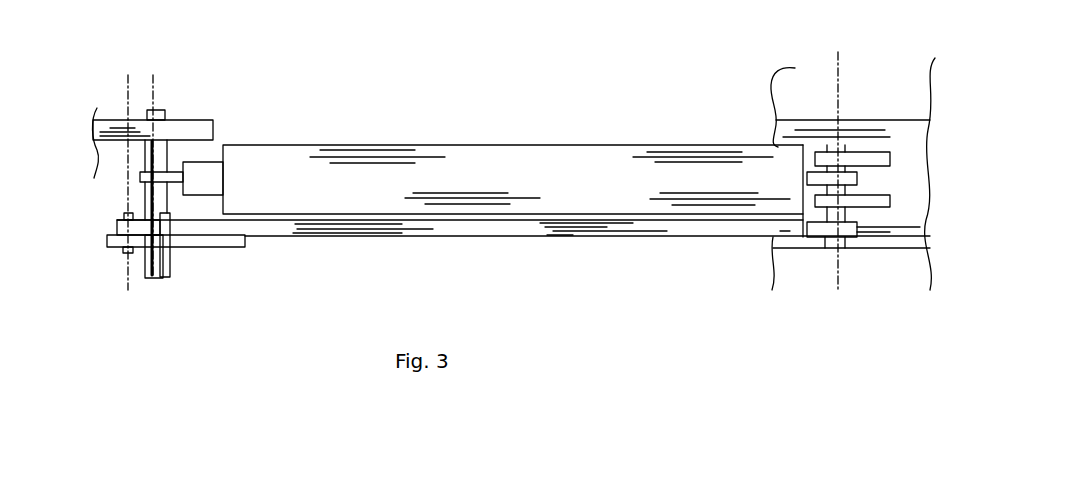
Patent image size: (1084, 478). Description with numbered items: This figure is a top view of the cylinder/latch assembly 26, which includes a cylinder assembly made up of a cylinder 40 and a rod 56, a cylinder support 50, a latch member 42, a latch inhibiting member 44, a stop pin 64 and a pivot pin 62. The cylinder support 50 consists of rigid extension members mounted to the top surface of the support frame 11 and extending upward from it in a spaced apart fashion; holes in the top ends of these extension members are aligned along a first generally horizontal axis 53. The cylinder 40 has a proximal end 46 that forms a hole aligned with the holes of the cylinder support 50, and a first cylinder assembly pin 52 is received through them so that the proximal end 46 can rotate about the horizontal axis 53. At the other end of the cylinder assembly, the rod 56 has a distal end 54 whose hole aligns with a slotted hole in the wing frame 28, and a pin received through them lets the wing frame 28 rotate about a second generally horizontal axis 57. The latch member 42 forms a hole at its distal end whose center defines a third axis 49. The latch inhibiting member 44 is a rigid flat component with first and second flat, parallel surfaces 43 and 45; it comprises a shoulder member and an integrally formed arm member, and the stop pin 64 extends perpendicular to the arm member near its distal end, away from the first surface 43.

The support frame 11 is at (923, 170).
The cylinder/latch assembly 26 is at (545, 116).
The wing frame 28 is at (193, 120).
The cylinder 40 is at (368, 178).
The latch member 42 is at (680, 233).
The first flat surface 43 is at (208, 224).
The latch inhibiting member 44 is at (216, 250).
The second flat surface 45 is at (232, 262).
The proximal end 46 is at (151, 279).
The third axis 49 is at (127, 292).
The cylinder support 50 is at (843, 195).
The first cylinder assembly pin 52 is at (835, 268).
The first horizontal axis 53 is at (836, 285).
The distal end 54 is at (140, 178).
The rod 56 is at (203, 178).
The second horizontal axis 57 is at (152, 298).
The pivot pin 62 is at (124, 215).
The stop pin 64 is at (173, 248).